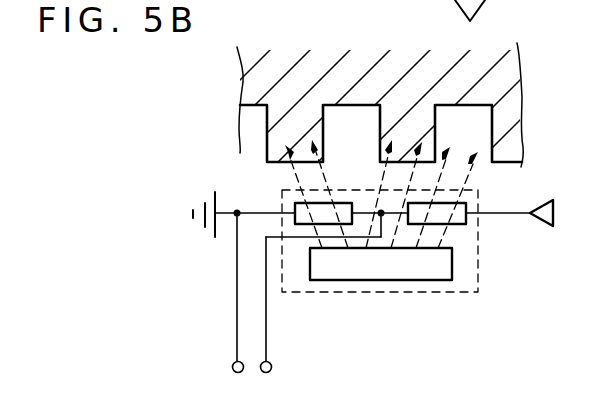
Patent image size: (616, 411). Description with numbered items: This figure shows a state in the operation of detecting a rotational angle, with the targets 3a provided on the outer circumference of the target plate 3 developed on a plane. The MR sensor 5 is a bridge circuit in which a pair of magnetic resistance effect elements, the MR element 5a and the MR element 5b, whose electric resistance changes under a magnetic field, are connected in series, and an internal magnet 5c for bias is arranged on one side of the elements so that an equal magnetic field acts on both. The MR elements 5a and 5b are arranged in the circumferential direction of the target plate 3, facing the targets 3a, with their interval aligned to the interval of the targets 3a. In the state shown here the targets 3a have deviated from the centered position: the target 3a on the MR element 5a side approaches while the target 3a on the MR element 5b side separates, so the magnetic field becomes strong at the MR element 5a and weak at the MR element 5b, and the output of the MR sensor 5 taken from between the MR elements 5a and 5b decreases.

The target plate 3 is at (391, 100).
The target 3a is at (267, 118).
The MR sensor 5 is at (413, 279).
The MR element 5a is at (462, 225).
The MR element 5b is at (304, 225).
The internal magnet 5c is at (372, 280).